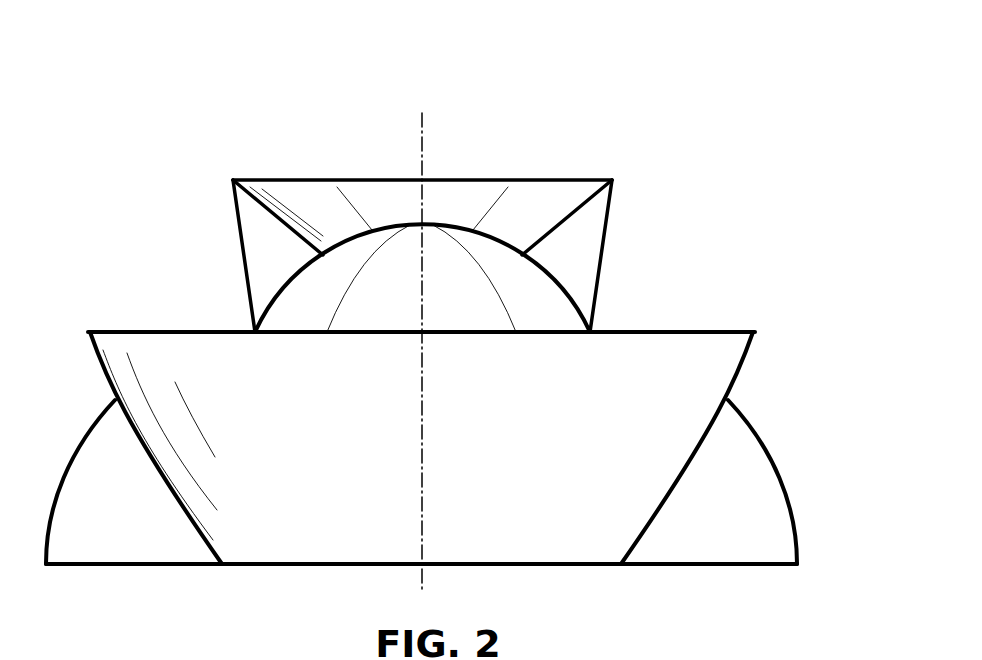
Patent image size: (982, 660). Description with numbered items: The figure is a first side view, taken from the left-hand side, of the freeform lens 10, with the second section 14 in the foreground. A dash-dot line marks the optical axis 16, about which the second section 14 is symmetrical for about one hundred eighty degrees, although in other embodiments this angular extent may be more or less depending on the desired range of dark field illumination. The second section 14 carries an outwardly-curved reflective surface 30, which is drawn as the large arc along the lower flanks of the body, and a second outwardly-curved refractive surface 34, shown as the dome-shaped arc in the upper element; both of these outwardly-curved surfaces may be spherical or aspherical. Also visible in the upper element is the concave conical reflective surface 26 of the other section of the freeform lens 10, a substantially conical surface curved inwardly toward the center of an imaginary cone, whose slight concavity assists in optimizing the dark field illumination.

The freeform lens 10 is at (446, 353).
The second section 14 is at (173, 328).
The optical axis 16 is at (423, 138).
The concave conical reflective surface 26 is at (308, 198).
The outwardly-curved reflective surface 30 is at (673, 420).
The second outwardly-curved refractive surface 34 is at (320, 283).